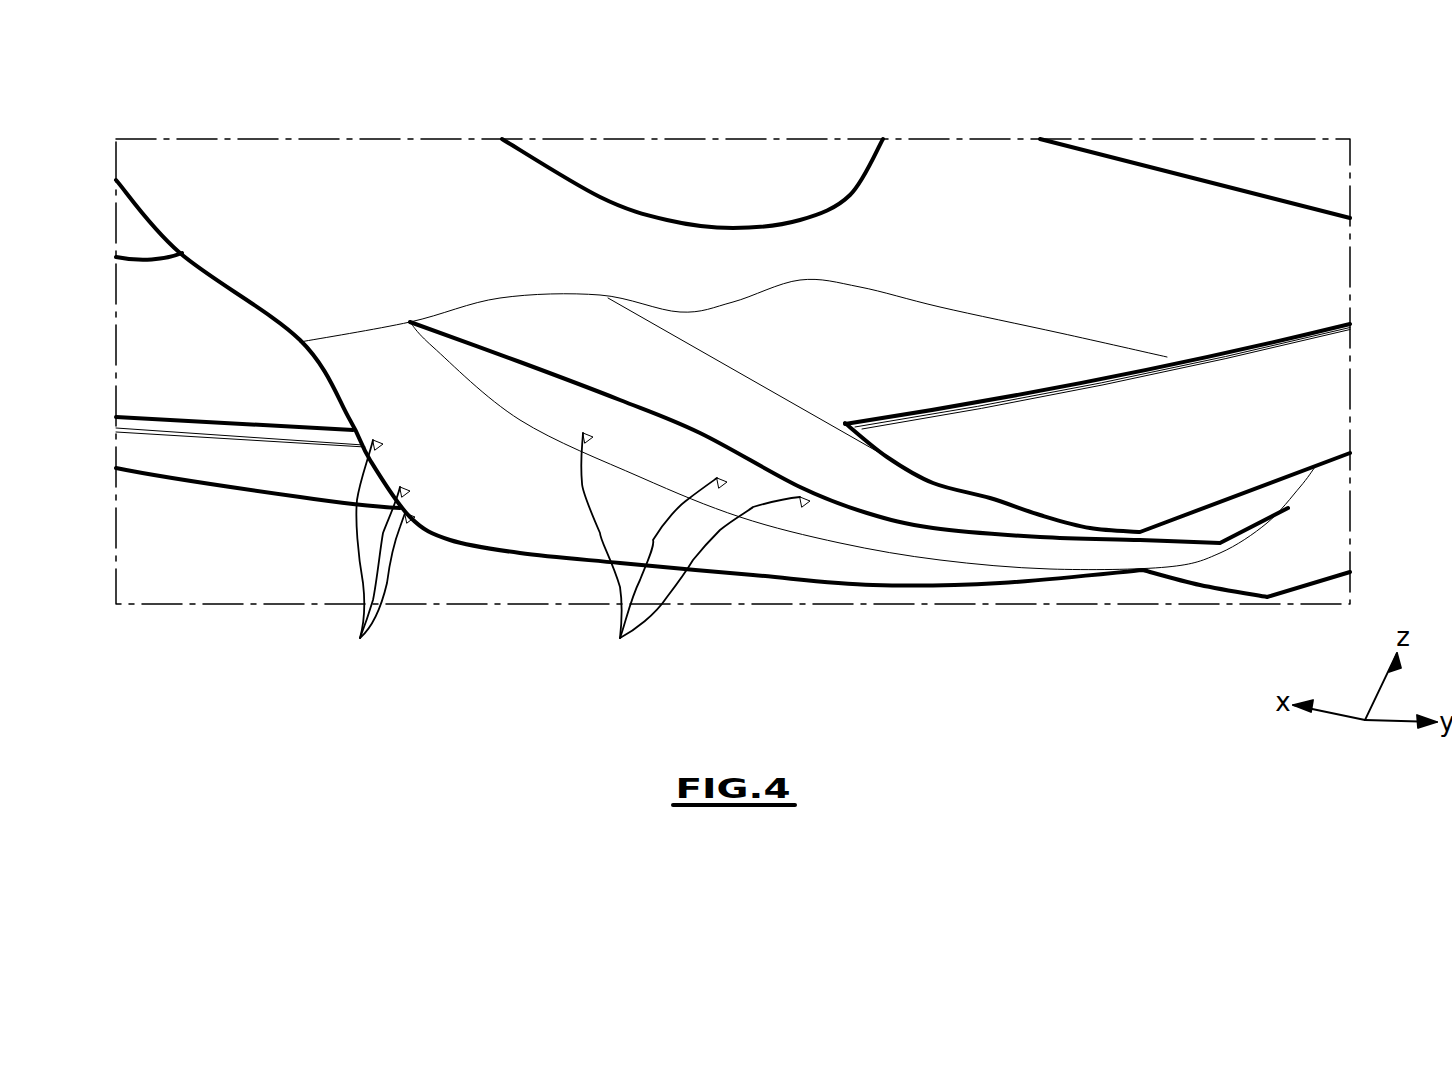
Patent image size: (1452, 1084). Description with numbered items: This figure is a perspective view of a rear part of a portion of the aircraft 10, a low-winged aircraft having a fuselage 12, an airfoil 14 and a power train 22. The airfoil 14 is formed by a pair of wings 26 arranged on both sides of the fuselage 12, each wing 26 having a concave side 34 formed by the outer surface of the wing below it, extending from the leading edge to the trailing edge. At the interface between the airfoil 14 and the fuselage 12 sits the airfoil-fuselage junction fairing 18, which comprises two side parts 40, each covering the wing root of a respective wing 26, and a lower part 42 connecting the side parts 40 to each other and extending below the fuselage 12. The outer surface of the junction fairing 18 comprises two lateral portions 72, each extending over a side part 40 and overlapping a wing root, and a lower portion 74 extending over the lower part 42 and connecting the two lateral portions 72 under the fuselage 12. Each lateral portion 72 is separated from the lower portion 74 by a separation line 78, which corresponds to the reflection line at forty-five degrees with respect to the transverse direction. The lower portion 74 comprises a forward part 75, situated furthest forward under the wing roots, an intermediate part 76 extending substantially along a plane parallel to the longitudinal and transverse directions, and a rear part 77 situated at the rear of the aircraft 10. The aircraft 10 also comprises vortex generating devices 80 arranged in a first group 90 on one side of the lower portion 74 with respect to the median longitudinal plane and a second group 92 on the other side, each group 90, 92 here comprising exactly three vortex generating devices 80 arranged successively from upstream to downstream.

The aircraft 10 is at (1170, 167).
The fuselage 12 is at (1197, 232).
The airfoil 14 is at (1283, 390).
The airfoil-fuselage junction fairing 18 is at (848, 337).
The power train 22 is at (722, 178).
The wing 26 is at (1097, 477).
The concave side 34 is at (1282, 437).
The side part 40 is at (862, 446).
The lower part 42 is at (830, 557).
The lateral portion 72 is at (913, 347).
The lower portion 74 is at (760, 552).
The forward part 75 is at (1222, 548).
The intermediate part 76 is at (918, 573).
The rear part 77 is at (520, 493).
The separation line 78 is at (1021, 539).
The vortex generating device 80 is at (569, 552).
The first group 90 is at (385, 675).
The second group 92 is at (647, 675).